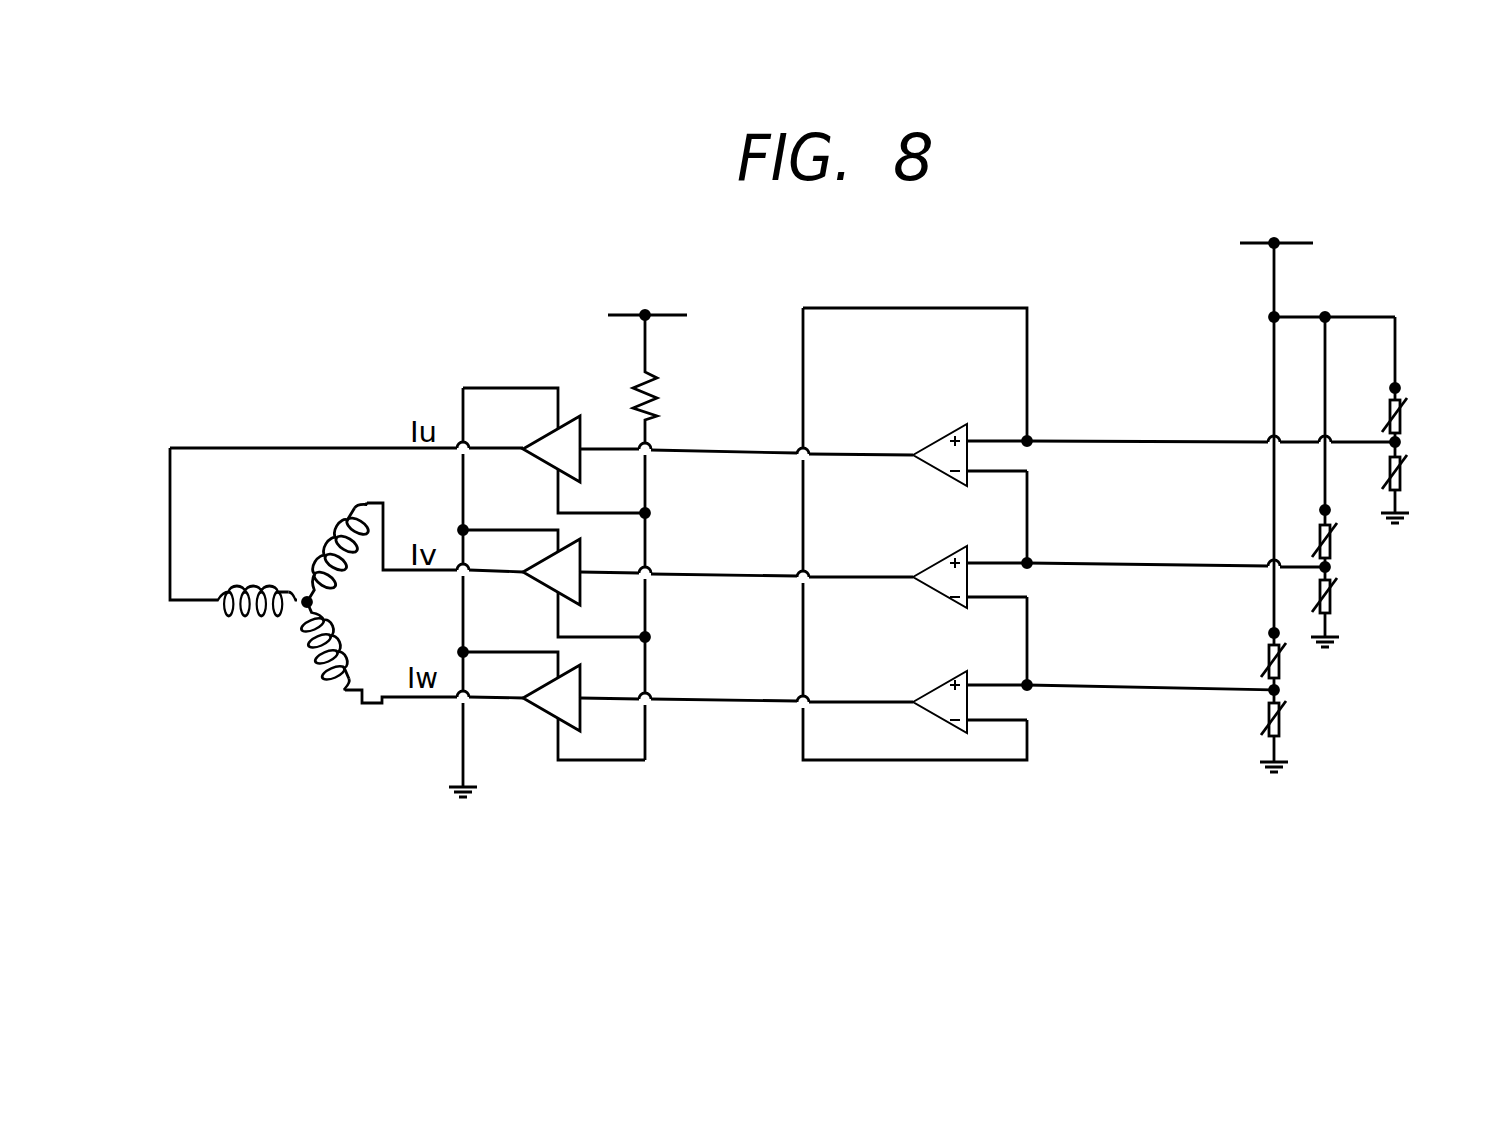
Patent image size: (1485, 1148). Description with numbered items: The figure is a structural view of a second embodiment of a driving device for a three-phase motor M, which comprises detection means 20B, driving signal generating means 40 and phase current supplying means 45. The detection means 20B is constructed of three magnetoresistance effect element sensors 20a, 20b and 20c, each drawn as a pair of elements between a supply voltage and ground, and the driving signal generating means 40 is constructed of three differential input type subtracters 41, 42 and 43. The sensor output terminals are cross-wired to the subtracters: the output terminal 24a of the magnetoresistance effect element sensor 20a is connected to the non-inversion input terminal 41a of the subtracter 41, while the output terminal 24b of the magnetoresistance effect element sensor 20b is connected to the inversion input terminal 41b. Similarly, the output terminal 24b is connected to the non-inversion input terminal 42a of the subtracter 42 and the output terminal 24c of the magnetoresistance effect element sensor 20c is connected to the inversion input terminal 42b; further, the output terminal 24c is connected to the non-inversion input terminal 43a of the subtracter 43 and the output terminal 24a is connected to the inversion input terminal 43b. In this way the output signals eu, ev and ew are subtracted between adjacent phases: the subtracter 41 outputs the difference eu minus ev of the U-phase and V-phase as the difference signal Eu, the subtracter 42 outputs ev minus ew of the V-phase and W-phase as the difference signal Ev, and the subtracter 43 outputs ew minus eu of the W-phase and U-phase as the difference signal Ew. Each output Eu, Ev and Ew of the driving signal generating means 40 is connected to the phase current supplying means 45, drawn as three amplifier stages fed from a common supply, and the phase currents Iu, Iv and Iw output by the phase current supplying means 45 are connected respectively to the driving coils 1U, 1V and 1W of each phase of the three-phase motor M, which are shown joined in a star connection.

The three-phase motor M is at (313, 673).
The driving coil 1U is at (238, 618).
The driving coil 1V is at (323, 546).
The driving coil 1W is at (320, 662).
The phase current supplying means 45 is at (640, 848).
The driving signal generating means 40 is at (937, 606).
The subtracter 41 is at (942, 437).
The non-inversion input terminal 41a is at (1013, 438).
The inversion input terminal 41b is at (1007, 472).
The subtracter 42 is at (942, 561).
The non-inversion input terminal 42a is at (1013, 561).
The inversion input terminal 42b is at (1007, 597).
The subtracter 43 is at (942, 684).
The non-inversion input terminal 43a is at (1013, 683).
The inversion input terminal 43b is at (1007, 721).
The output terminal 24a is at (1235, 441).
The output terminal 24b is at (1235, 566).
The output terminal 24c is at (1232, 689).
The magnetoresistance effect element sensor 20a is at (1403, 447).
The magnetoresistance effect element sensor 20b is at (1333, 571).
The magnetoresistance effect element sensor 20c is at (1282, 694).
The detection means 20B is at (1357, 569).